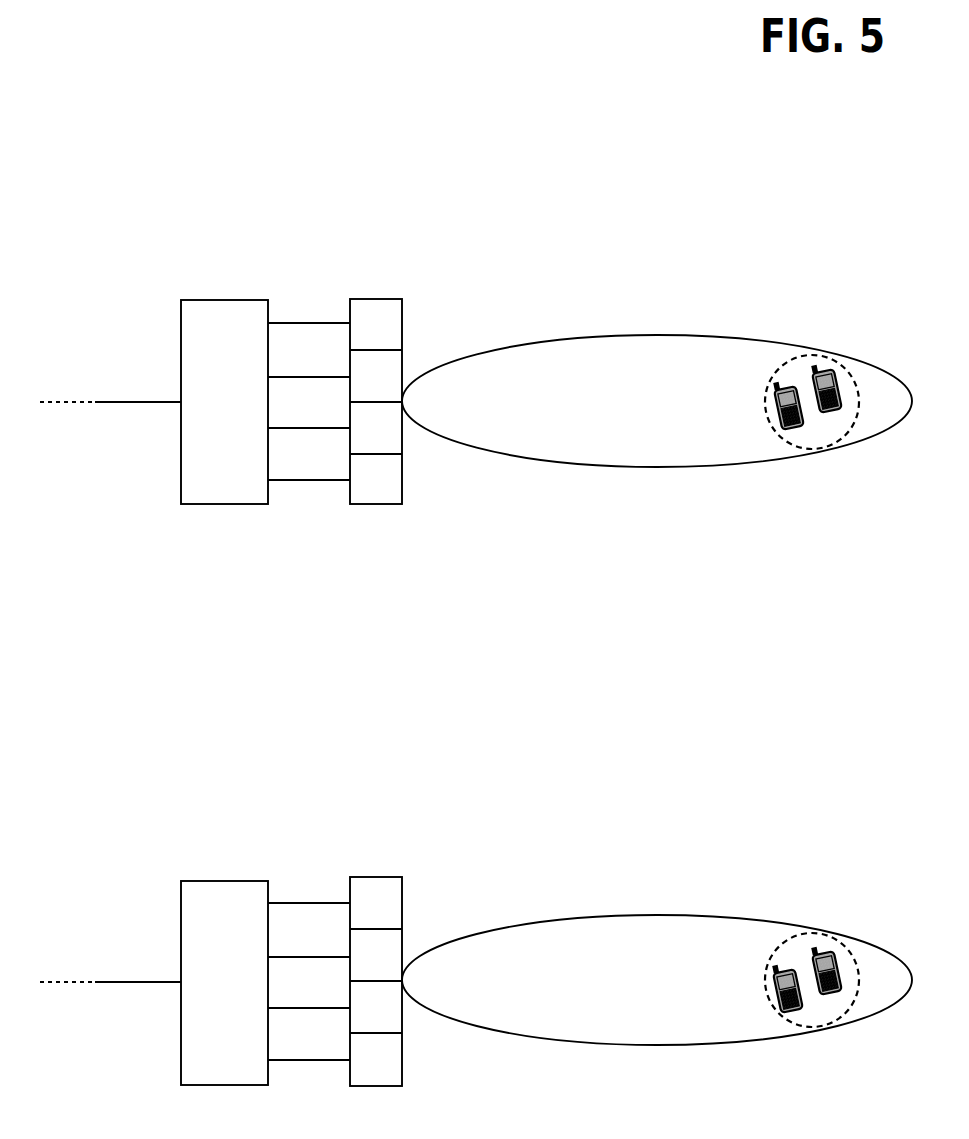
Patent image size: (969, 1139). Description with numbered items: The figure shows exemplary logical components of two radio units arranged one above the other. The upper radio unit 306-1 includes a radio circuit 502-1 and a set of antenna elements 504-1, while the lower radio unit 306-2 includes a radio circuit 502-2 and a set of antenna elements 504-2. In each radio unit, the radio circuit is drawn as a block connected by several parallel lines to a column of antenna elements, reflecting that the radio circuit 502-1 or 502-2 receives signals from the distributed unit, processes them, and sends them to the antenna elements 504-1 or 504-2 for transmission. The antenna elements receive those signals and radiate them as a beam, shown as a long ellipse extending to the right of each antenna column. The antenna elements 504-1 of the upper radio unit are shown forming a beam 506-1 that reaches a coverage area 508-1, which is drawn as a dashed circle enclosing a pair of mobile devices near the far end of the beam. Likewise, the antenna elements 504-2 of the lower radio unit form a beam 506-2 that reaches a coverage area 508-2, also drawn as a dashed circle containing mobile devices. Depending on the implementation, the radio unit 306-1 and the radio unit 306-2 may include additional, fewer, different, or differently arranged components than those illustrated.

The radio unit 306-1 is at (241, 208).
The radio unit 306-2 is at (241, 746).
The radio circuit 502-1 is at (255, 427).
The radio circuit 502-2 is at (224, 983).
The antenna elements 504-1 is at (374, 308).
The antenna elements 504-2 is at (446, 926).
The beam 506-1 is at (722, 413).
The beam 506-2 is at (657, 980).
The coverage area 508-1 is at (780, 366).
The coverage area 508-2 is at (725, 924).